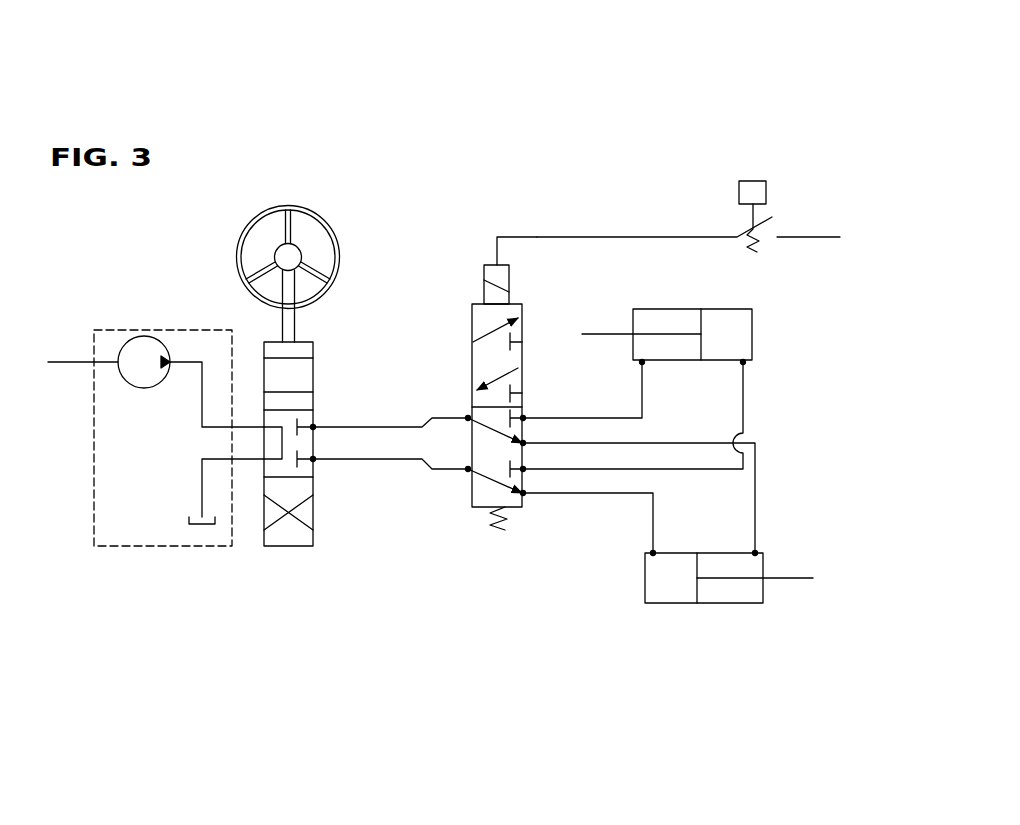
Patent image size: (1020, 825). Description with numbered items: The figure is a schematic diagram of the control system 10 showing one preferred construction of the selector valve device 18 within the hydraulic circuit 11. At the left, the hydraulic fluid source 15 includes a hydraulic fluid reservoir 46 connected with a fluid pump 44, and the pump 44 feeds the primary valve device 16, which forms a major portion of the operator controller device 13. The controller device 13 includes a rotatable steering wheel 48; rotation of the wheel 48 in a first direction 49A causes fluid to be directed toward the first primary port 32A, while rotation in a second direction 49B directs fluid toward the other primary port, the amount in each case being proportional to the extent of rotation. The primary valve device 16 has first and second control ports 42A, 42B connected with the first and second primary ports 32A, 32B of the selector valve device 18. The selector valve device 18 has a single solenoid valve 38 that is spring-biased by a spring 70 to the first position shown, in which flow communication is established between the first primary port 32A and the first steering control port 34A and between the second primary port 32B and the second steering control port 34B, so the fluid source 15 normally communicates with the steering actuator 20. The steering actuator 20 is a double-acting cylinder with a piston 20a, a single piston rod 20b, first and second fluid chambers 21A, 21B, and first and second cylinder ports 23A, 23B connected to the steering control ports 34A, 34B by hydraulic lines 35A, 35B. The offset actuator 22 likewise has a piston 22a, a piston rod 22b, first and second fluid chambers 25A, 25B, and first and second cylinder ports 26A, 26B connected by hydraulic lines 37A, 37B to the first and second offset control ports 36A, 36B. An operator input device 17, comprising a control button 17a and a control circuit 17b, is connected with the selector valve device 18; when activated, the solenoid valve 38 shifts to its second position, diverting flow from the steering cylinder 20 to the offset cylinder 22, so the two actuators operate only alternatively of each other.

The control system 10 is at (240, 625).
The hydraulic circuit 11 is at (413, 358).
The operator controller device 13 is at (332, 312).
The hydraulic fluid source 15 is at (93, 440).
The primary valve device 16 is at (320, 357).
The operator input device 17 is at (642, 222).
The control button 17a is at (758, 181).
The control circuit 17b is at (537, 237).
The selector valve device 18 is at (467, 308).
The steering actuator 20 is at (767, 560).
The piston 20a is at (693, 593).
The piston rod 20b is at (792, 580).
The first fluid chamber 21A is at (665, 595).
The second fluid chamber 21B is at (738, 593).
The offset actuator 22 is at (760, 309).
The piston 22a is at (703, 318).
The piston rod 22b is at (606, 332).
The first cylinder port 23A is at (653, 553).
The second cylinder port 23B is at (755, 553).
The first fluid chamber 25A is at (742, 336).
The second fluid chamber 25B is at (663, 322).
The first cylinder port 26A is at (745, 365).
The second cylinder port 26B is at (643, 364).
The first primary port 32A is at (468, 469).
The second primary port 32B is at (468, 418).
The first steering control port 34A is at (525, 493).
The second steering control port 34B is at (523, 443).
The hydraulic line 35A is at (655, 502).
The hydraulic line 35B is at (757, 465).
The first offset control port 36A is at (525, 469).
The second offset control port 36B is at (523, 418).
The hydraulic line 37A is at (385, 460).
The hydraulic line 37B is at (380, 426).
The solenoid valve 38 is at (482, 360).
The first control port 42A is at (315, 460).
The second control port 42B is at (313, 427).
The fluid pump 44 is at (130, 348).
The hydraulic fluid reservoir 46 is at (202, 527).
The steering wheel 48 is at (313, 227).
The first direction 49A is at (217, 280).
The second direction 49B is at (360, 272).
The spring 70 is at (498, 530).